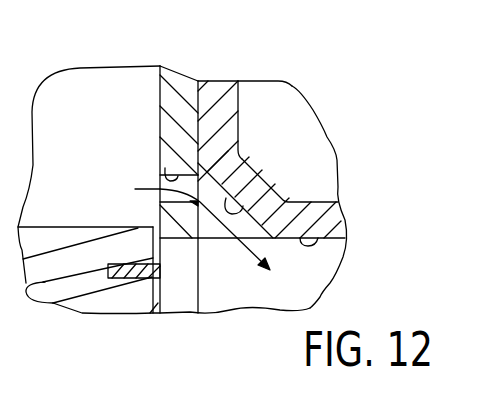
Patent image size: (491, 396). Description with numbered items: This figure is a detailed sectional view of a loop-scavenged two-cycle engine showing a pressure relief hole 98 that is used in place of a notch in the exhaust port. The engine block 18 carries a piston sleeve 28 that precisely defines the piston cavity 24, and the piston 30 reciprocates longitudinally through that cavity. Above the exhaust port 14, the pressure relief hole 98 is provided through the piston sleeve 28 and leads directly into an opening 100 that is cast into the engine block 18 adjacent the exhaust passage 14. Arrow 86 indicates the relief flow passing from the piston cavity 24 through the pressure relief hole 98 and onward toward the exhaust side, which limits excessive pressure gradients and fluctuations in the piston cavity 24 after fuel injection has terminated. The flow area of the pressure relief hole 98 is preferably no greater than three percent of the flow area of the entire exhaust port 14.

The exhaust port 14 is at (317, 240).
The engine block 18 is at (218, 88).
The piston cavity 24 is at (92, 120).
The piston sleeve 28 is at (176, 81).
The piston 30 is at (78, 297).
The arrow 86 is at (140, 189).
The pressure relief hole 98 is at (153, 163).
The opening 100 is at (262, 190).